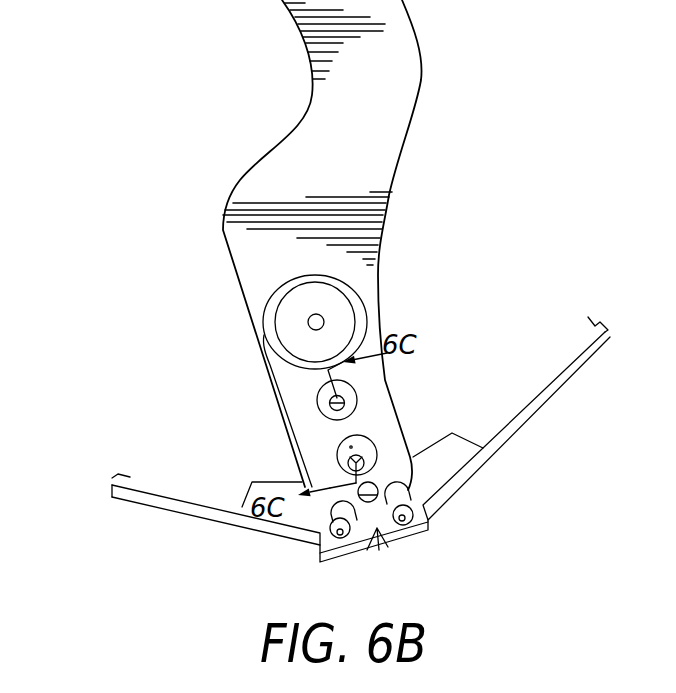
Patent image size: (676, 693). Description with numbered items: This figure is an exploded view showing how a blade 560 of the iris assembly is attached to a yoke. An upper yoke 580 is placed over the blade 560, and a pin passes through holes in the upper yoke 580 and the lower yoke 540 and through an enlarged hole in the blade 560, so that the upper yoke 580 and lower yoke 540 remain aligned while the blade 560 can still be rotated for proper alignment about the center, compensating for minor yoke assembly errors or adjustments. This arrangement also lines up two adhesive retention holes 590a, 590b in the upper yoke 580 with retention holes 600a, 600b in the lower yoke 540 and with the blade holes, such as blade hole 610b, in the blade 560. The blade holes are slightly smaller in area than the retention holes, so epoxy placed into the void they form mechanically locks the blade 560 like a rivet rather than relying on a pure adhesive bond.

The blade 560 is at (377, 178).
The upper yoke 580 is at (404, 404).
The lower yoke 540 is at (465, 433).
The adhesive retention hole 590a is at (206, 391).
The retention hole 600a is at (337, 403).
The adhesive retention hole 590b is at (213, 459).
The retention hole 600b is at (356, 469).
The blade hole 610b is at (337, 454).